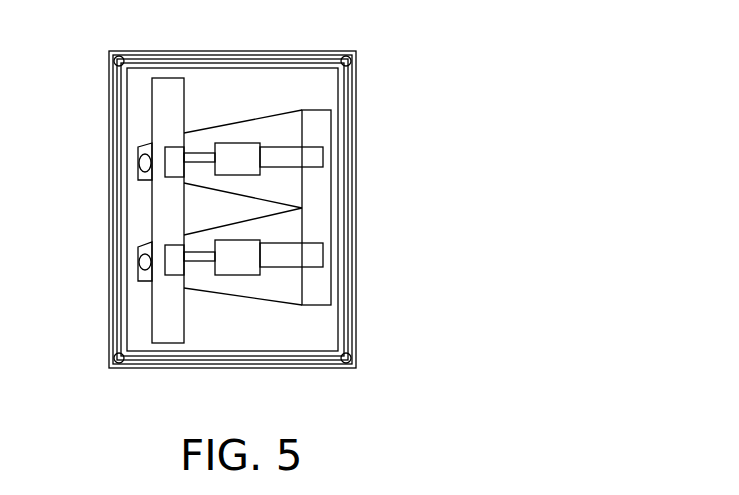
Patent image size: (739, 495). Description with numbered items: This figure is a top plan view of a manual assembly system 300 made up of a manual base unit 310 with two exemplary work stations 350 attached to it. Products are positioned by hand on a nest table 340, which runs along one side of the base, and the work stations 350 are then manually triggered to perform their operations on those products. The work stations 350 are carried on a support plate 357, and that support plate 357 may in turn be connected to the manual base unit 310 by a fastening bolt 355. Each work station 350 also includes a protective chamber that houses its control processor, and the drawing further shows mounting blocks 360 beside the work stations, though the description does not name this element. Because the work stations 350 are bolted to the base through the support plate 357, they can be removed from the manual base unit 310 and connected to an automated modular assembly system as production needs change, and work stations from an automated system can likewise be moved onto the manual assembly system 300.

The manual assembly system 300 is at (480, 82).
The manual base unit 310 is at (357, 348).
The nest table 340 is at (168, 93).
The work station 350 is at (331, 147).
The fastening bolt 355 is at (140, 262).
The support plate 357 is at (213, 288).
The mounting block 360 is at (318, 121).